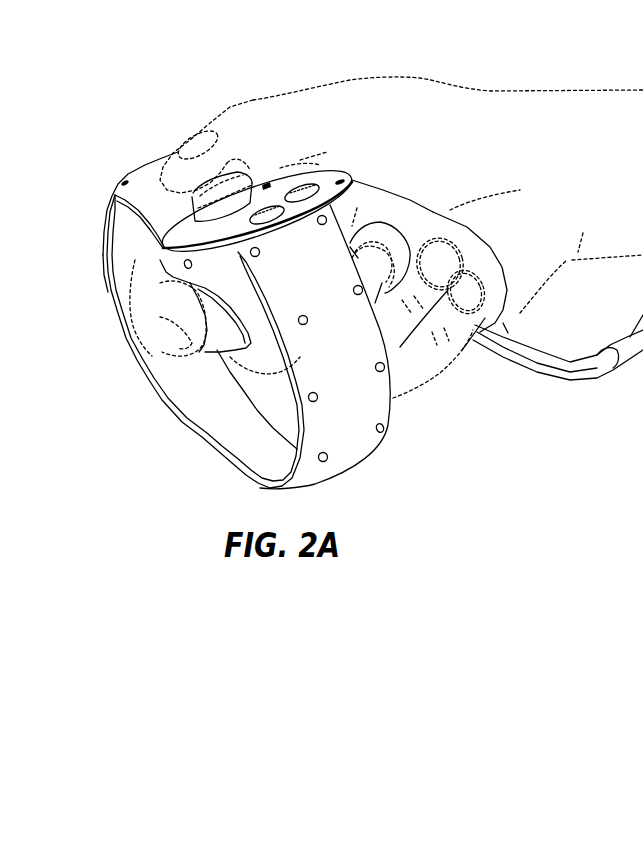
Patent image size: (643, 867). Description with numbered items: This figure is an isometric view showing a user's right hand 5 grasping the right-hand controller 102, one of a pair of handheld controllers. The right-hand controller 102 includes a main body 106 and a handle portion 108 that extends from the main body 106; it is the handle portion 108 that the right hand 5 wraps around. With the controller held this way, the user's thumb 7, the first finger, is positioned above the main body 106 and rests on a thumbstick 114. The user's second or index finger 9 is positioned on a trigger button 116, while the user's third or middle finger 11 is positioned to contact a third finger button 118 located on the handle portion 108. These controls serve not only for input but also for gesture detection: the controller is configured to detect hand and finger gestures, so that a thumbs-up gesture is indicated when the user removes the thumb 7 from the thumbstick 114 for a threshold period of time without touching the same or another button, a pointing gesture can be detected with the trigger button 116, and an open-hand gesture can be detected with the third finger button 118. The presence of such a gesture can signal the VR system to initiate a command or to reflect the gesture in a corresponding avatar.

The right hand 5 is at (519, 83).
The thumb 7 is at (253, 103).
The index finger 9 is at (152, 310).
The middle finger 11 is at (374, 260).
The right-hand controller 102 is at (136, 152).
The main body 106 is at (158, 257).
The handle portion 108 is at (487, 270).
The thumbstick 114 is at (244, 190).
The trigger button 116 is at (217, 345).
The third finger button 118 is at (374, 260).